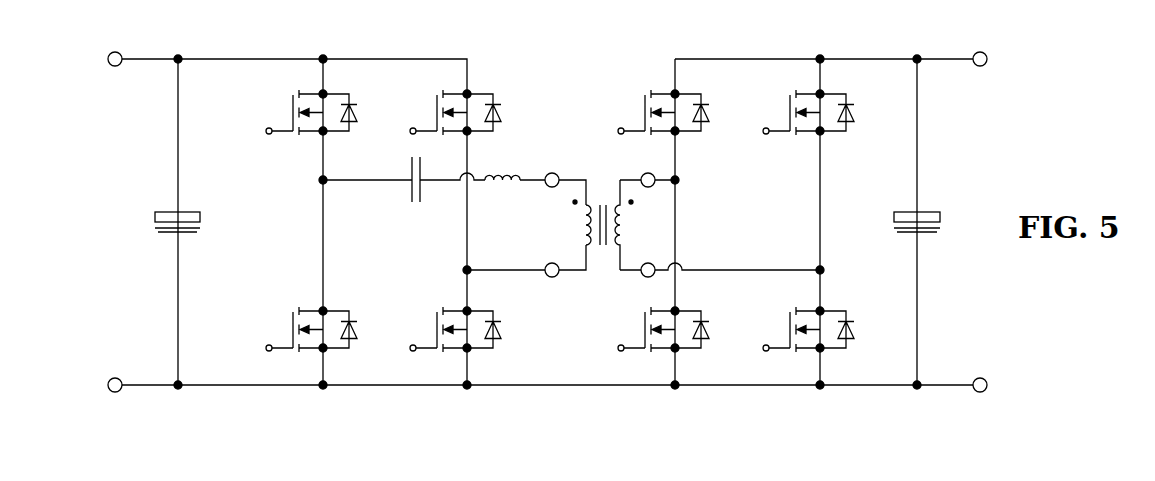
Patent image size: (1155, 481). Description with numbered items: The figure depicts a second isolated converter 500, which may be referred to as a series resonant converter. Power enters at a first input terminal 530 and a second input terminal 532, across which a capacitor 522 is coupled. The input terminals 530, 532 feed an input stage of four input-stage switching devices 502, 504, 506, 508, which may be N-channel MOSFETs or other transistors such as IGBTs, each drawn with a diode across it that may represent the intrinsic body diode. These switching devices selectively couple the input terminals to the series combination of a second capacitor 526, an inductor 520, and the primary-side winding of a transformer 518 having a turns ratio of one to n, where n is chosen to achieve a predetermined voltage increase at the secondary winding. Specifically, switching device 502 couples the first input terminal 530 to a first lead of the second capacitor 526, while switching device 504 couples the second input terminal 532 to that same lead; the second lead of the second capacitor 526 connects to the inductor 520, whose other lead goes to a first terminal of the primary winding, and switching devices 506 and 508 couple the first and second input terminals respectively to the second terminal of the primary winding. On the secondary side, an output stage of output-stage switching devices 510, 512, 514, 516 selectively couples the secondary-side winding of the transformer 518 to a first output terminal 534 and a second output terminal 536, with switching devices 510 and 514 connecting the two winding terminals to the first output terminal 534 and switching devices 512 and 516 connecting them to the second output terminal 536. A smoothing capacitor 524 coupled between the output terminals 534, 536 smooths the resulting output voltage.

The second isolated converter 500 is at (920, 27).
The input-stage switching device 502 is at (293, 113).
The input-stage switching device 504 is at (293, 329).
The input-stage switching device 506 is at (437, 113).
The input-stage switching device 508 is at (437, 329).
The output-stage switching device 510 is at (645, 113).
The output-stage switching device 512 is at (645, 329).
The output-stage switching device 514 is at (790, 113).
The output-stage switching device 516 is at (790, 329).
The transformer 518 is at (603, 248).
The inductor 520 is at (507, 175).
The capacitor 522 is at (165, 212).
The smoothing capacitor 524 is at (930, 212).
The second capacitor 526 is at (412, 192).
The first input terminal 530 is at (115, 52).
The second input terminal 532 is at (115, 378).
The first output terminal 534 is at (980, 52).
The second output terminal 536 is at (980, 378).